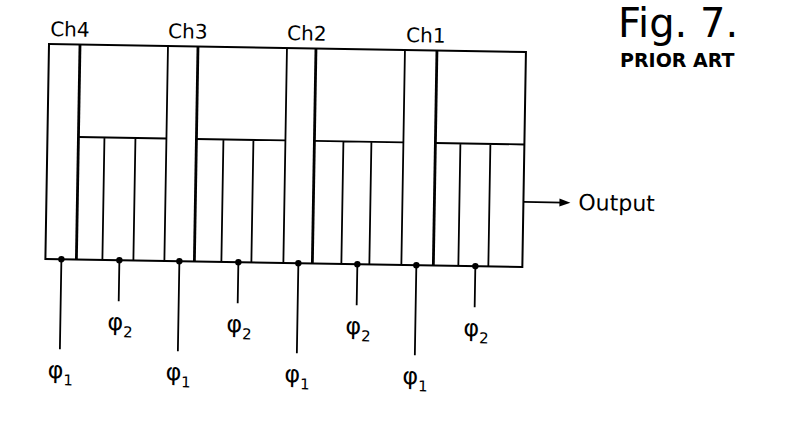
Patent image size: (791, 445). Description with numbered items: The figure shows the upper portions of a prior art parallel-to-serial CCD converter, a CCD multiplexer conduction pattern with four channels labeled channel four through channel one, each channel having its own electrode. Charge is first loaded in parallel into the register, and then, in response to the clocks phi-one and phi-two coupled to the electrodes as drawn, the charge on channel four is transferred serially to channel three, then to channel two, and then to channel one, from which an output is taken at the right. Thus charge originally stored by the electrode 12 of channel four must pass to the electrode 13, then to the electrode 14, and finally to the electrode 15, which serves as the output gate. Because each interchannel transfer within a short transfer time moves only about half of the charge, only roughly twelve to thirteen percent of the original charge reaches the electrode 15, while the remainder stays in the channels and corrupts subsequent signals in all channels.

The electrode 12 is at (73, 116).
The electrode 13 is at (189, 111).
The electrode 14 is at (311, 109).
The electrode 15 is at (431, 115).